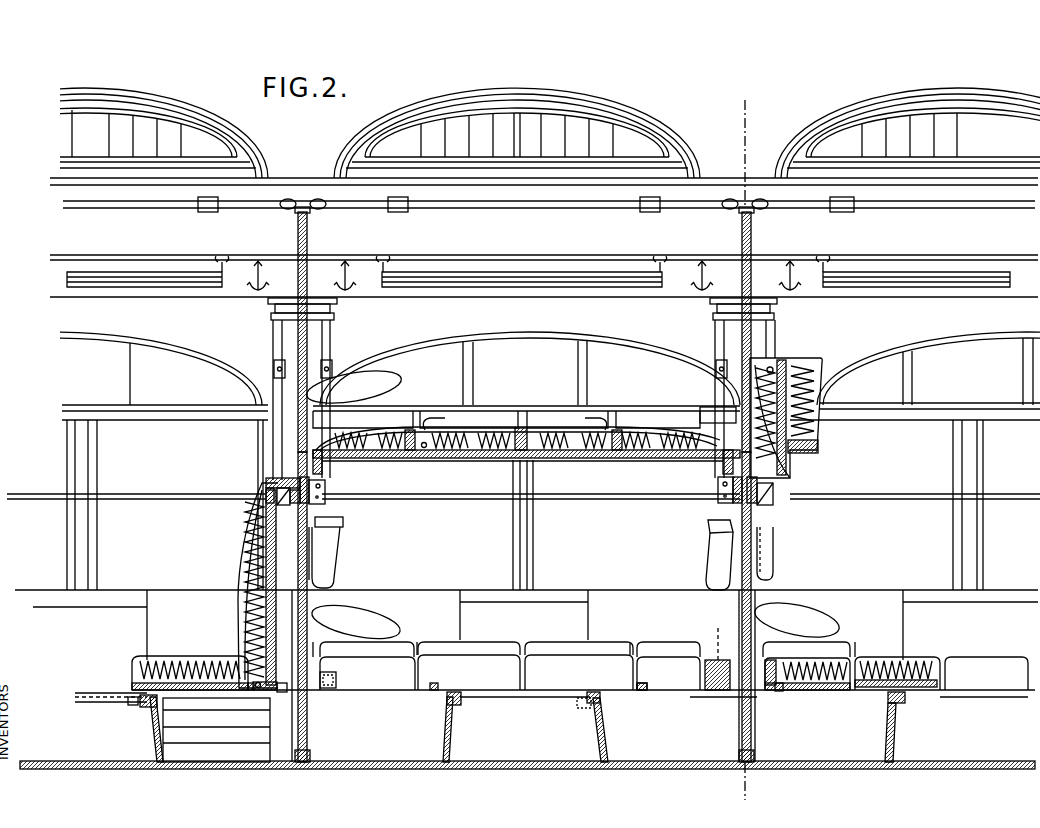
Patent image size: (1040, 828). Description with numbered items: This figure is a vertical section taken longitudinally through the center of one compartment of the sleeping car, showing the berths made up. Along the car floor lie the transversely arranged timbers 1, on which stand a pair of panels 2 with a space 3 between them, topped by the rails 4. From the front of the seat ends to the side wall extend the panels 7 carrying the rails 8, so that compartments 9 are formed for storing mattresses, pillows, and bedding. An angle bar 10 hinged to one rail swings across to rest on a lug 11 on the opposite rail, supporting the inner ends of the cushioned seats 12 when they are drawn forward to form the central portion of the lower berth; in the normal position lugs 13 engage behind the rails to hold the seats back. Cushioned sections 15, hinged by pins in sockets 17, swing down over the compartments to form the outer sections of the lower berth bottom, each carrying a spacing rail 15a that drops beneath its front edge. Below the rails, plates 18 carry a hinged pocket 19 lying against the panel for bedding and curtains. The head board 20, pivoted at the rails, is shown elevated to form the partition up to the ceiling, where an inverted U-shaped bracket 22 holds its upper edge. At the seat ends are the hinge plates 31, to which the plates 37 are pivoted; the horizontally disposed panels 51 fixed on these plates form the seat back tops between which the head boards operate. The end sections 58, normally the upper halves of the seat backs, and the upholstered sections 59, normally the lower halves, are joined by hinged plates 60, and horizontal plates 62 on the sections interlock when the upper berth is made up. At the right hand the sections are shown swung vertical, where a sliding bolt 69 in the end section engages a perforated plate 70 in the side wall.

The transversely arranged timbers 1 is at (307, 765).
The panels 2 is at (312, 702).
The space 3 is at (308, 728).
The rails 4 is at (312, 500).
The panels 7 is at (150, 736).
The rails 8 is at (150, 710).
The compartments 9 is at (235, 744).
The angle bar 10 is at (85, 700).
The lug 11 is at (130, 703).
The cushioned seats 12 is at (140, 658).
The lugs 13 is at (160, 703).
The cushioned sections 15 is at (860, 632).
The spacing rail 15a is at (850, 705).
The sockets 17 is at (281, 693).
The outwardly projecting plates 18 is at (343, 522).
The pocket 19 is at (336, 560).
The head board 20 is at (751, 271).
The inverted U-shaped bracket 22 is at (309, 213).
The hinge plates 31 is at (326, 488).
The plate 37 is at (327, 466).
The horizontally disposed panels 51 is at (266, 481).
The end sections 58 is at (400, 440).
The upholstered sections 59 is at (490, 442).
The plates 60 is at (414, 448).
The horizontal plates 62 is at (522, 452).
The sliding bolt 69 is at (440, 425).
The perforated plate 70 is at (275, 363).